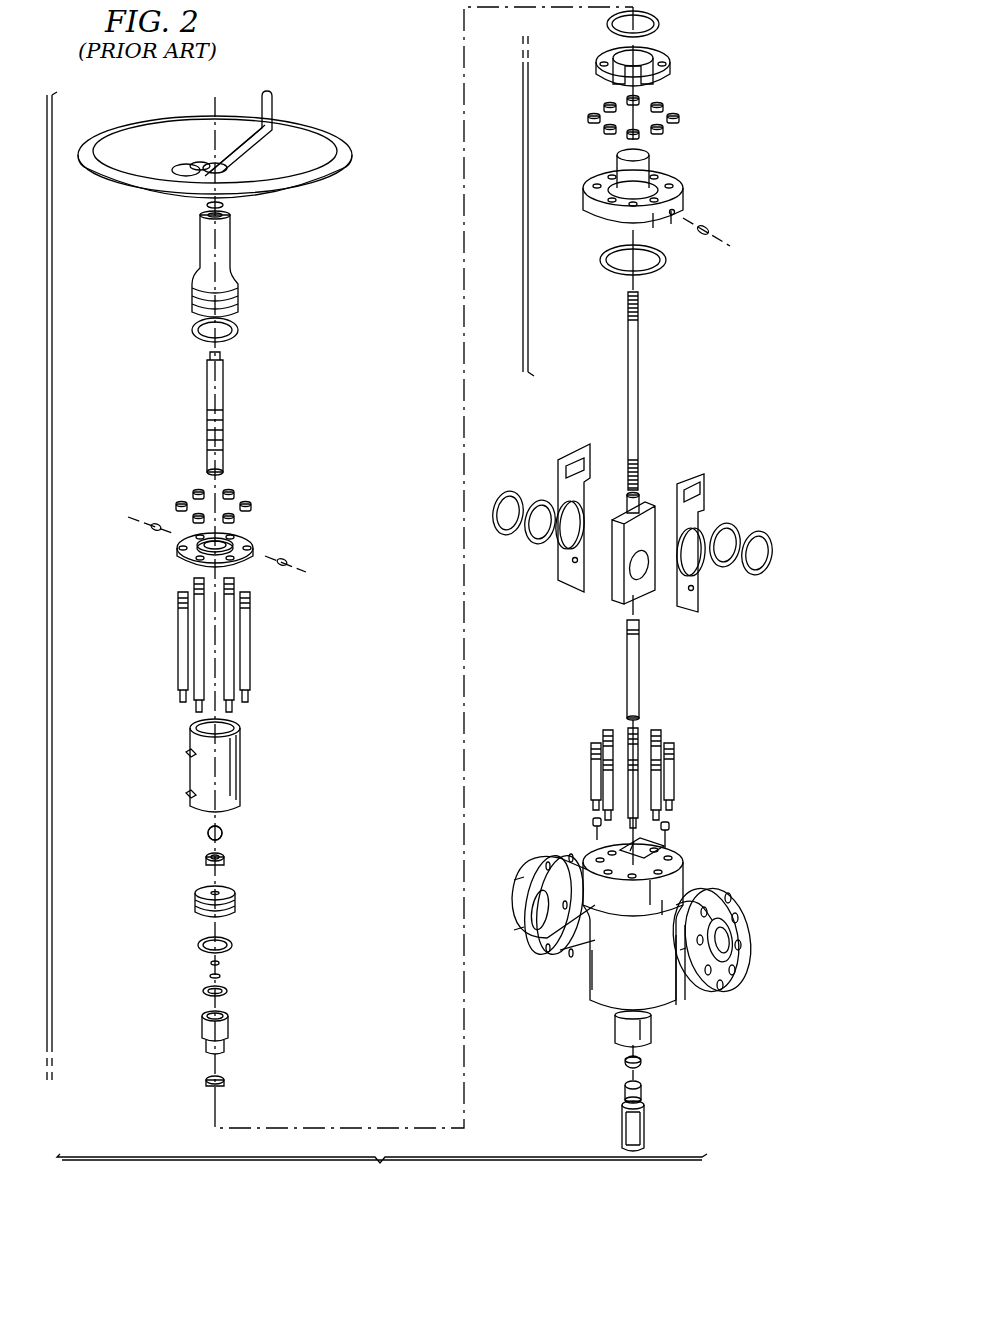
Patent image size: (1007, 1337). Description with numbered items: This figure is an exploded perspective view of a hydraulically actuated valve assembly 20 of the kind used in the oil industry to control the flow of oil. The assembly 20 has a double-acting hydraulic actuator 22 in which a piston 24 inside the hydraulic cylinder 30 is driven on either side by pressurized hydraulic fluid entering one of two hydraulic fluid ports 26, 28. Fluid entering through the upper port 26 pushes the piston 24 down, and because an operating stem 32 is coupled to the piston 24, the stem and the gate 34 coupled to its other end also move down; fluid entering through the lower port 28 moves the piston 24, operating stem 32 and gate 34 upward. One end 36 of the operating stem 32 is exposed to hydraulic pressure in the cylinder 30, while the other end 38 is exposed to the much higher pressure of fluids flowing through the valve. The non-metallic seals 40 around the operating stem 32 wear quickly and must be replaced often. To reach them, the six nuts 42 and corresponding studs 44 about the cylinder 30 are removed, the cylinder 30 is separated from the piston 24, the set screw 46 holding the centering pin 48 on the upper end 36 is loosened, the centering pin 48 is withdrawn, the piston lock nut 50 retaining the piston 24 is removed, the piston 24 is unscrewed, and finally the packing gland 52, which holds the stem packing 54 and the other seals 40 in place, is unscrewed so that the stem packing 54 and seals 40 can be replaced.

The assembly 20 is at (382, 1174).
The double-acting hydraulic actuator 22 is at (48, 587).
The piston 24 is at (196, 908).
The upper hydraulic fluid port 26 is at (186, 756).
The lower hydraulic fluid port 28 is at (186, 796).
The hydraulic cylinder 30 is at (180, 773).
The operating stem 32 is at (628, 334).
The gate 34 is at (622, 510).
The upper end of operating stem 36 is at (638, 308).
The other end of operating stem 38 is at (638, 468).
The seals 40 is at (198, 948).
The nuts 42 is at (184, 508).
The studs 44 is at (190, 638).
The set screw 46 is at (224, 834).
The centering pin 48 is at (208, 834).
The piston lock nut 50 is at (224, 862).
The packing gland 52 is at (228, 1028).
The stem packing 54 is at (206, 1082).